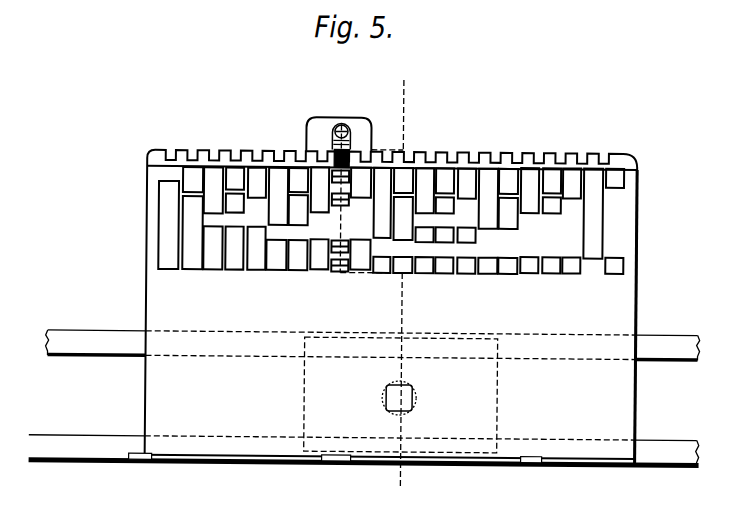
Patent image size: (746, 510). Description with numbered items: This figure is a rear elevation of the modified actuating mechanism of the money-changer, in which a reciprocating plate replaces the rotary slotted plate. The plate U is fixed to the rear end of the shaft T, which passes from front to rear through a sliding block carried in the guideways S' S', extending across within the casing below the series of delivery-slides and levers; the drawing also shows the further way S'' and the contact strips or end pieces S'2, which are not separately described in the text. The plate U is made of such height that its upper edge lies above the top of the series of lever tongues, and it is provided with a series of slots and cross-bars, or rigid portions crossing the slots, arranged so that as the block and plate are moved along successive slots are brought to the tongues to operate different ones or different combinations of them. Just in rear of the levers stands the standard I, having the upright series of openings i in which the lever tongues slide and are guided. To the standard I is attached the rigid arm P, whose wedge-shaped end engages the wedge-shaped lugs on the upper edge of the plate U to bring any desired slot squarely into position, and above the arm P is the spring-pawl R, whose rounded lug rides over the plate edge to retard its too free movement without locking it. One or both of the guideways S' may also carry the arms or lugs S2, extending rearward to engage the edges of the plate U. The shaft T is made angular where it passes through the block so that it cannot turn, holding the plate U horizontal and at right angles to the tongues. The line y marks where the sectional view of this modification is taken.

The plate U is at (146, 225).
The standard I is at (340, 123).
The spring-pawl R is at (331, 149).
The rigid arm P is at (352, 152).
The openings i is at (345, 207).
The section line y is at (373, 282).
The guideways S' is at (373, 337).
The lower bar S'' is at (364, 443).
The contact strips S'2 is at (334, 478).
The arms or lugs S2 is at (401, 395).
The shaft T is at (399, 398).